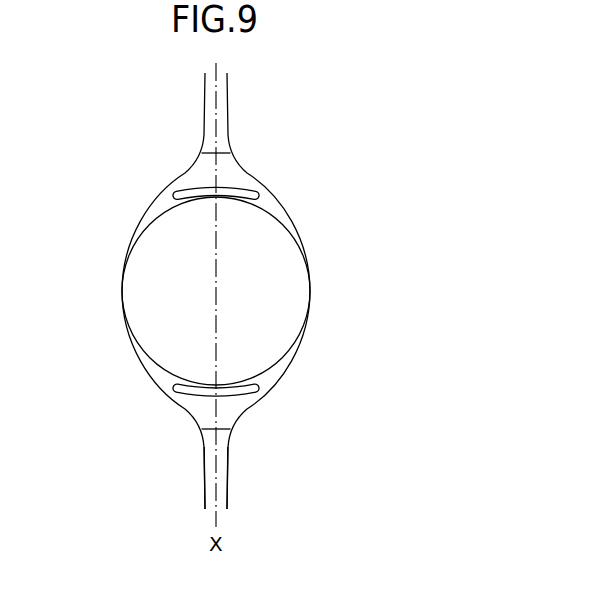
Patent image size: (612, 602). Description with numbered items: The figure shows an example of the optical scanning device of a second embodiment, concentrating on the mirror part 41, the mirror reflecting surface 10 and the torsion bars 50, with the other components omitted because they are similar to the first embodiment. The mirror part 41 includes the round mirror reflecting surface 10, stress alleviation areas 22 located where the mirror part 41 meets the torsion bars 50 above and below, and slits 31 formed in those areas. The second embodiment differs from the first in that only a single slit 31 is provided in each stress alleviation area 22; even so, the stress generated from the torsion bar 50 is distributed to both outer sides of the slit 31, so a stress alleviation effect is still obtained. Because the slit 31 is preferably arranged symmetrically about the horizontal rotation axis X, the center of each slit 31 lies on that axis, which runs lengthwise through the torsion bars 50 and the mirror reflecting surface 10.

The mirror reflecting surface 10 is at (282, 289).
The stress alleviation area 22 is at (228, 410).
The slit 31 is at (237, 186).
The mirror part 41 is at (375, 198).
The torsion bar 50 is at (223, 484).